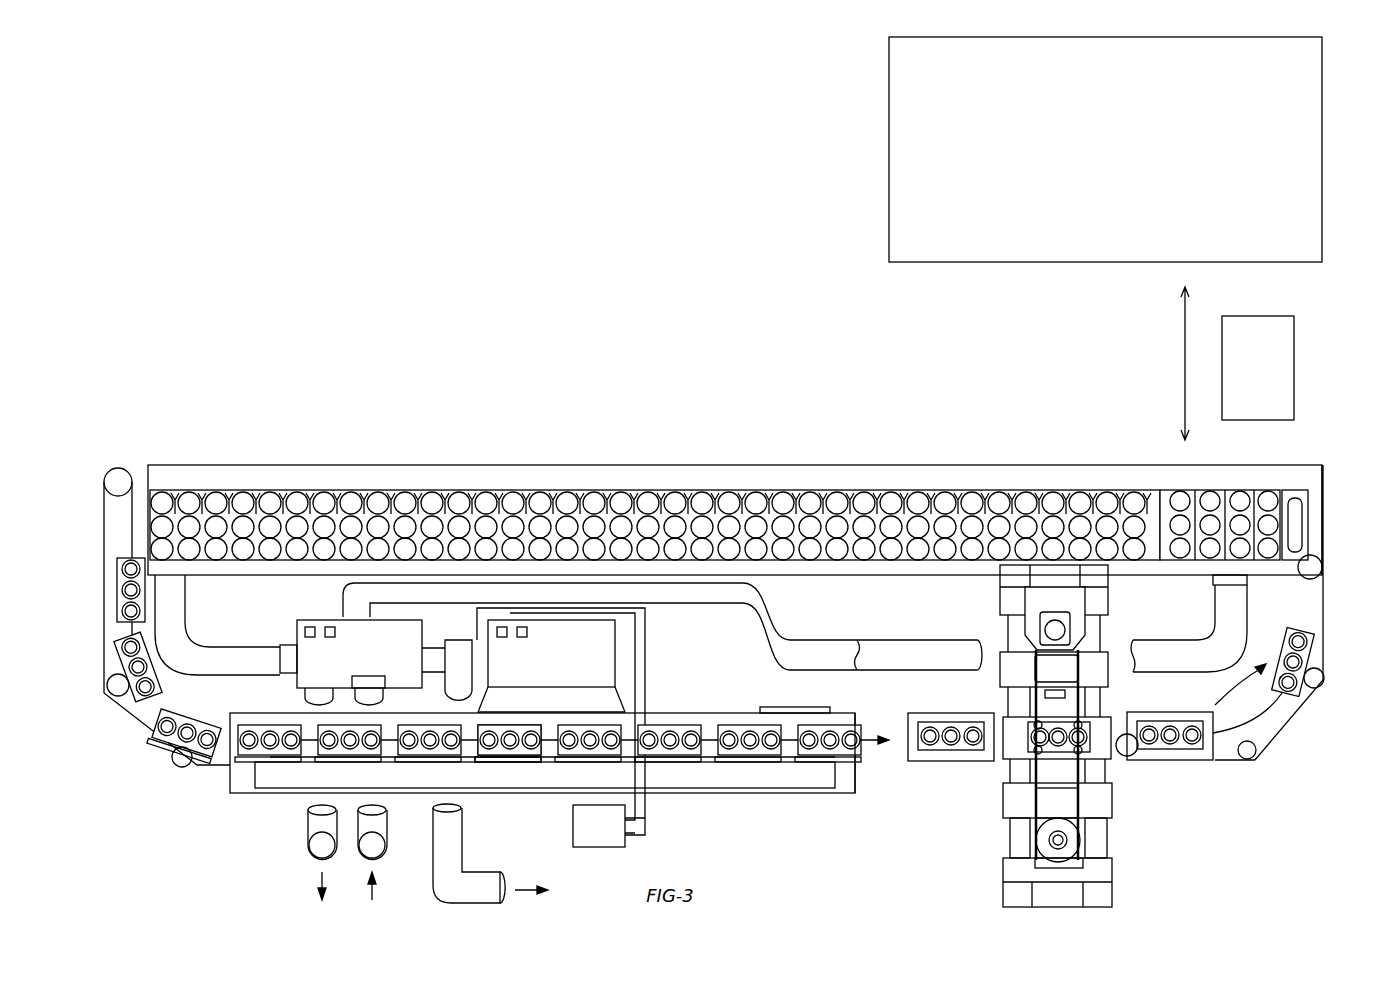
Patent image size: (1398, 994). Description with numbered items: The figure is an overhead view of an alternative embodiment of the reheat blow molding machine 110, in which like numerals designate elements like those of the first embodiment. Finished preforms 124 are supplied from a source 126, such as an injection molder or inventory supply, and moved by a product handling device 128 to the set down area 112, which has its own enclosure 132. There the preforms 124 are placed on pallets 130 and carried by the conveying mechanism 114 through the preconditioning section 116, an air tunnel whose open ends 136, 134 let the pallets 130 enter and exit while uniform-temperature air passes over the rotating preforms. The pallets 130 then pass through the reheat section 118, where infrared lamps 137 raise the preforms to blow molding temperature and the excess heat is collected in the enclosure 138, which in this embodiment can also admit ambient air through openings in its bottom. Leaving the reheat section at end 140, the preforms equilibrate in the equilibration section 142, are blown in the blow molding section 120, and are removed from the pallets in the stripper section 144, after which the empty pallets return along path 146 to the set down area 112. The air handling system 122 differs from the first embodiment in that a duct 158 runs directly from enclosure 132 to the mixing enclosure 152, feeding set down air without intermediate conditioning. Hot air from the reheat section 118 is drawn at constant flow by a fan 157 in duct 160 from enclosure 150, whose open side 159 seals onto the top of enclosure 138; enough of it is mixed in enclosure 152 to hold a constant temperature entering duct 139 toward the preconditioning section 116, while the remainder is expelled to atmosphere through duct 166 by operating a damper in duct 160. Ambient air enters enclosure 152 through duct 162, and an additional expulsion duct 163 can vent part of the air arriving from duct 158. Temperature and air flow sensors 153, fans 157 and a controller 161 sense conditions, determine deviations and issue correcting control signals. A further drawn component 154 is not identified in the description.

The reheat blow molding machine 110 is at (528, 428).
The set down area 112 is at (1283, 472).
The conveying mechanism 114 is at (890, 470).
The preconditioning section 116 is at (347, 467).
The reheat section 118 is at (230, 800).
The blow molding section 120 is at (1115, 900).
The air handling system 122 is at (333, 590).
The preforms 124 is at (1178, 493).
The source 126 is at (900, 183).
The product handling device 128 is at (1296, 345).
The pallets 130 is at (1312, 660).
The enclosure 132 is at (1322, 487).
The end 134 is at (1325, 537).
The end 136 is at (138, 470).
The infrared lamps 137 is at (540, 762).
The enclosure 138 is at (690, 792).
The duct 139 is at (177, 665).
The end 140 is at (845, 782).
The equilibration section 142 is at (925, 763).
The stripper section 144 is at (1172, 755).
The path 146 is at (1298, 715).
The enclosure 150 is at (582, 653).
The enclosure 152 is at (409, 648).
The temperature and air flow sensors 153 is at (317, 645).
The guide bar 154 is at (822, 715).
The fans 157 is at (290, 673).
The duct 158 is at (918, 642).
The open side 159 is at (578, 710).
The duct 160 is at (455, 640).
The controller 161 is at (585, 838).
The duct 162 is at (390, 835).
The expulsion duct 163 is at (312, 848).
The duct 166 is at (433, 898).